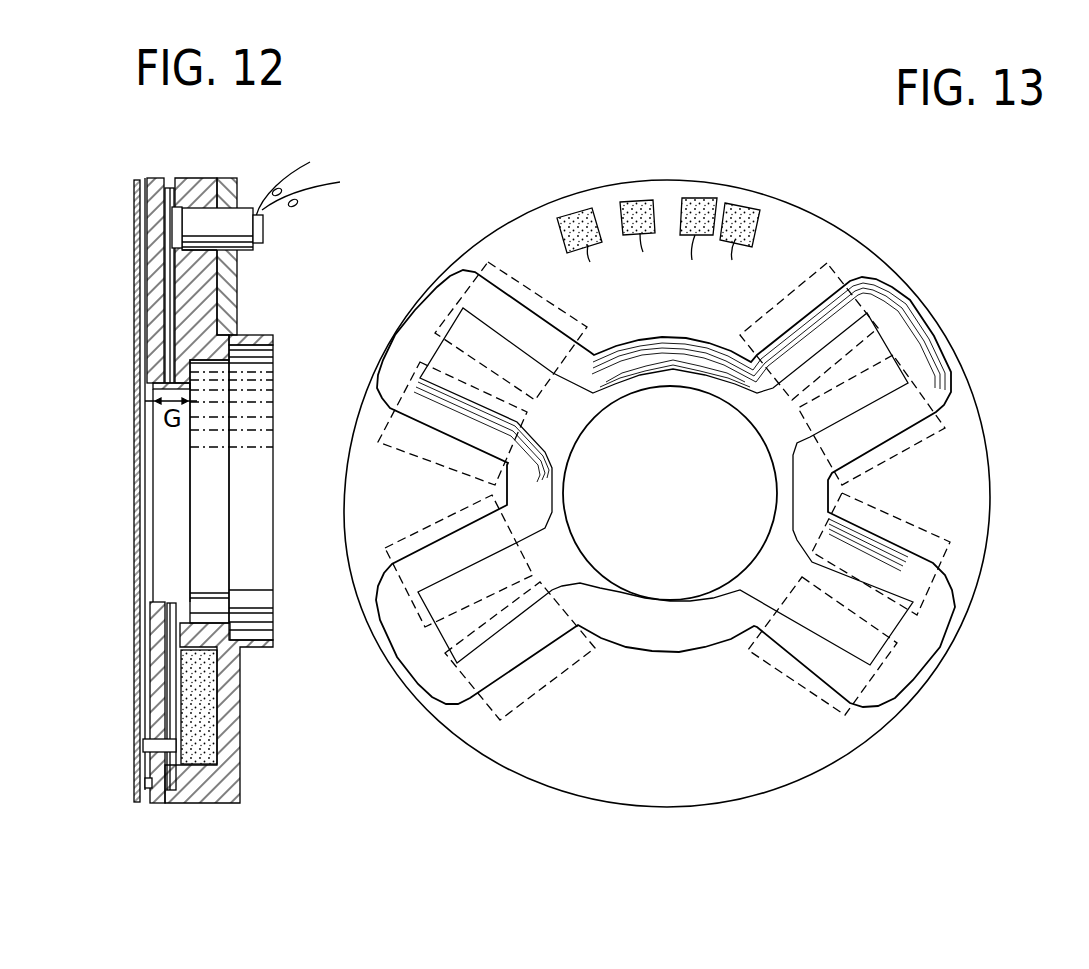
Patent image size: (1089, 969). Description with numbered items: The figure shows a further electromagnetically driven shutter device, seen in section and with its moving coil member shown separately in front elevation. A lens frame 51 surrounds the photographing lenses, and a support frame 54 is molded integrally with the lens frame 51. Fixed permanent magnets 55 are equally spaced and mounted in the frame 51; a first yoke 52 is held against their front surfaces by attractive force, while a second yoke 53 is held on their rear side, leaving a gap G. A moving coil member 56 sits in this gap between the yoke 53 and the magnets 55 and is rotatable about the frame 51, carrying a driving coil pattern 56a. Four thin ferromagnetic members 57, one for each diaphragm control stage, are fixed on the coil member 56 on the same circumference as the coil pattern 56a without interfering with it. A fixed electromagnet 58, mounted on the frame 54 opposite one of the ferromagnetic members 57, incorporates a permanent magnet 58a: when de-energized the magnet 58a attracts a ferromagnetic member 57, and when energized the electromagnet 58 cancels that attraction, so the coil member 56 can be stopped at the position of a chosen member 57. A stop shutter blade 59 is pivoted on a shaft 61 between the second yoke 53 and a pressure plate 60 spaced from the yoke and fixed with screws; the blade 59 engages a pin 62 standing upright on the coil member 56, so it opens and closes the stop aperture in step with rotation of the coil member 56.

In FIG. 12, the lens frame 51 is at (252, 340).
In FIG. 12, the first yoke 52 is at (230, 178).
In FIG. 12, the second yoke 53 is at (155, 178).
In FIG. 12, the support frame 54 is at (200, 178).
In FIG. 12, the fixed permanent magnets 55 is at (215, 719).
In FIG. 13, the fixed permanent magnets 55 is at (495, 700).
In FIG. 12, the moving coil member 56 is at (169, 188).
In FIG. 13, the moving coil member 56 is at (818, 186).
In FIG. 13, the driving coil pattern 56a is at (903, 306).
In FIG. 13, the ferromagnetic members 57 is at (574, 220).
In FIG. 12, the fixed electromagnet 58 is at (253, 248).
In FIG. 12, the permanent magnet 58a is at (180, 225).
In FIG. 12, the stop shutter blade 59 is at (137, 181).
In FIG. 12, the pressure plate 60 is at (134, 250).
In FIG. 12, the shaft 61 is at (145, 783).
In FIG. 12, the pin 62 is at (143, 746).